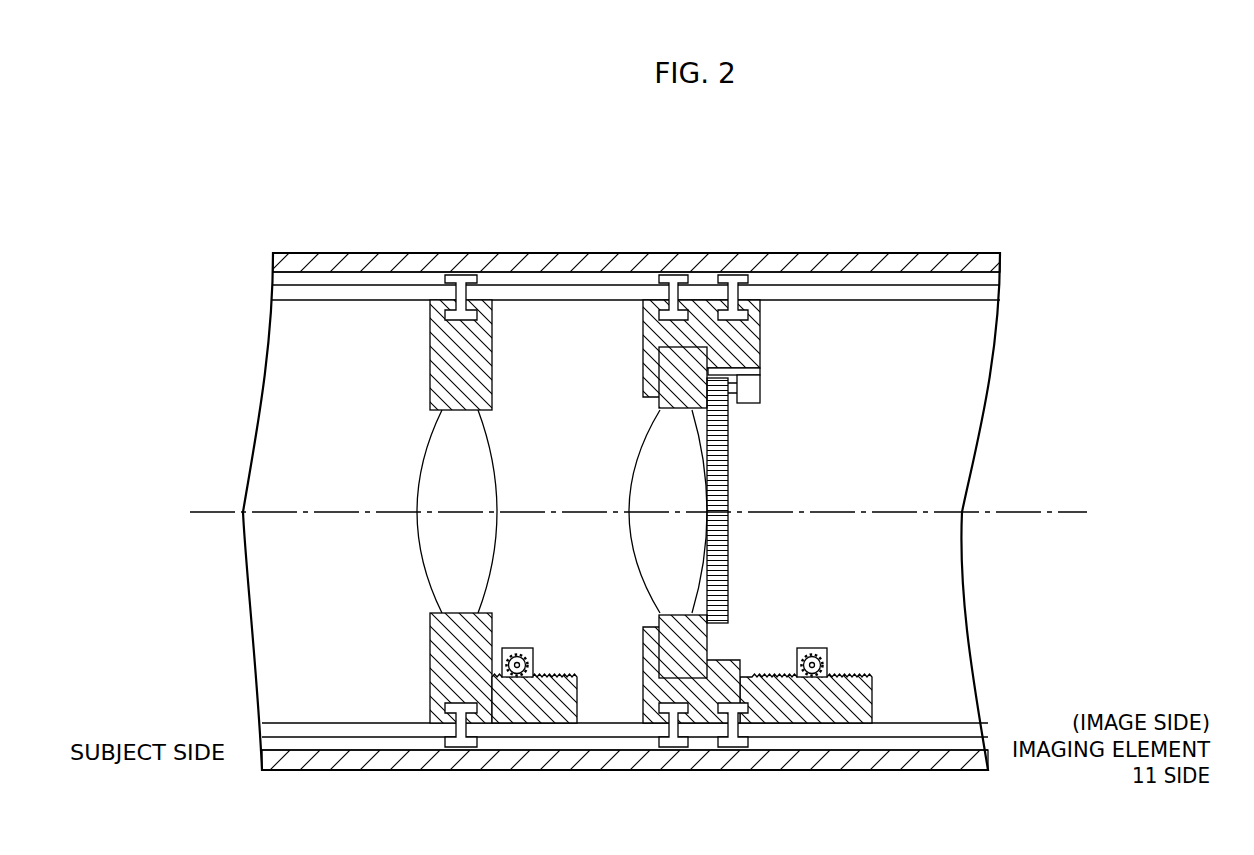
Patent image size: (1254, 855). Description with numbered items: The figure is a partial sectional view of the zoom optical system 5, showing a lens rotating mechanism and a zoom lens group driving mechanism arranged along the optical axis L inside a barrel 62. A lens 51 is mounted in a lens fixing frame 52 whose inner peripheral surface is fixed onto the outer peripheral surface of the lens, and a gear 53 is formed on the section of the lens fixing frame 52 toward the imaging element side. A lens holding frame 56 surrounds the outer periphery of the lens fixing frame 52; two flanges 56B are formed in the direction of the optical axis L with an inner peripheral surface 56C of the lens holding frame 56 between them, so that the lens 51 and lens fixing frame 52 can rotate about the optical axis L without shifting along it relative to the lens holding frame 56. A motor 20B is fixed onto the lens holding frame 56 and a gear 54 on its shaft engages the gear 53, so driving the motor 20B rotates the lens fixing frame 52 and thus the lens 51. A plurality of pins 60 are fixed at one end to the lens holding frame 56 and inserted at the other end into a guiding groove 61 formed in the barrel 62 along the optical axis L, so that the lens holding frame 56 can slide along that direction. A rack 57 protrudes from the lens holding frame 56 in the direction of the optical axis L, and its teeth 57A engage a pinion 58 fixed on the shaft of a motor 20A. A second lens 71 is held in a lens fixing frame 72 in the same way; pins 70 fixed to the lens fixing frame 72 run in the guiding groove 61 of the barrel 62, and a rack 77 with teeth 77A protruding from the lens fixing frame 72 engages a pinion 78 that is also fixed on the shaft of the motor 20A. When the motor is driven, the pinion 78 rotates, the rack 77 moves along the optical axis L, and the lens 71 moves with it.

The zoom optical system 5 is at (621, 491).
The optical axis L is at (1005, 510).
The motor 20A is at (517, 648).
The motor 20B is at (762, 387).
The lens 51 is at (658, 462).
The lens fixing frame 52 is at (677, 383).
The gear 53 is at (729, 436).
The gear 54 is at (758, 378).
The lens holding frame 56 is at (757, 335).
The flanges 56B is at (650, 372).
The inner peripheral surface 56C is at (660, 345).
The rack 57 is at (837, 672).
The teeth 57A is at (845, 676).
The pinion 58 is at (826, 660).
The pins 60 is at (733, 285).
The guiding groove 61 is at (912, 275).
The barrel 62 is at (830, 262).
The pins 70 is at (461, 282).
The lens 71 is at (432, 468).
The lens fixing frame 72 is at (430, 375).
The rack 77 is at (562, 681).
The teeth 77A is at (535, 676).
The pinion 78 is at (520, 660).